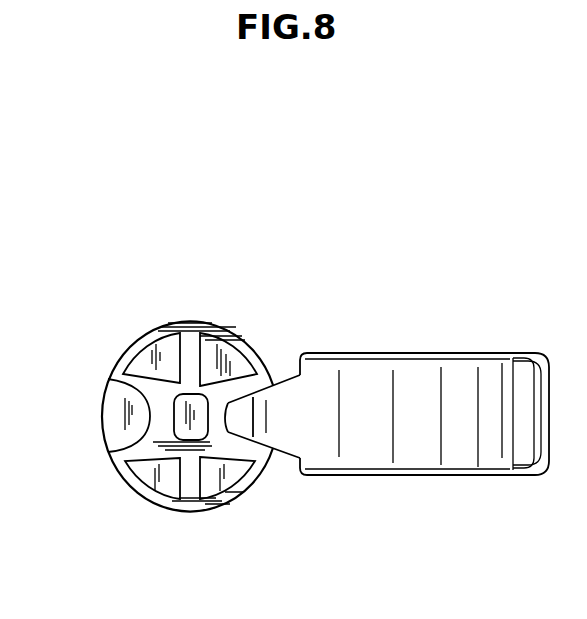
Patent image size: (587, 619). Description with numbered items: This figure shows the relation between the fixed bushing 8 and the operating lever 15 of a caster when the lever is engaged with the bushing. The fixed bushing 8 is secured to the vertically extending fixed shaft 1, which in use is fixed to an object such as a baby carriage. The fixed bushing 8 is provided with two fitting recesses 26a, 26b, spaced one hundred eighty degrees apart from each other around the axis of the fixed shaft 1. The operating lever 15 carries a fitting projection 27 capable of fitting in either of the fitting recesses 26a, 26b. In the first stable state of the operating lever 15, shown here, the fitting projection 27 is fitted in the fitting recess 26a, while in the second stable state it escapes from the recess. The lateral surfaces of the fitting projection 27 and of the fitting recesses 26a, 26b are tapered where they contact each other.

The fixed bushing 8 is at (135, 338).
The fixed shaft 1 is at (192, 402).
The fitting recess 26b is at (110, 421).
The fitting recess 26a is at (240, 415).
The fitting projection 27 is at (273, 398).
The operating lever 15 is at (455, 352).